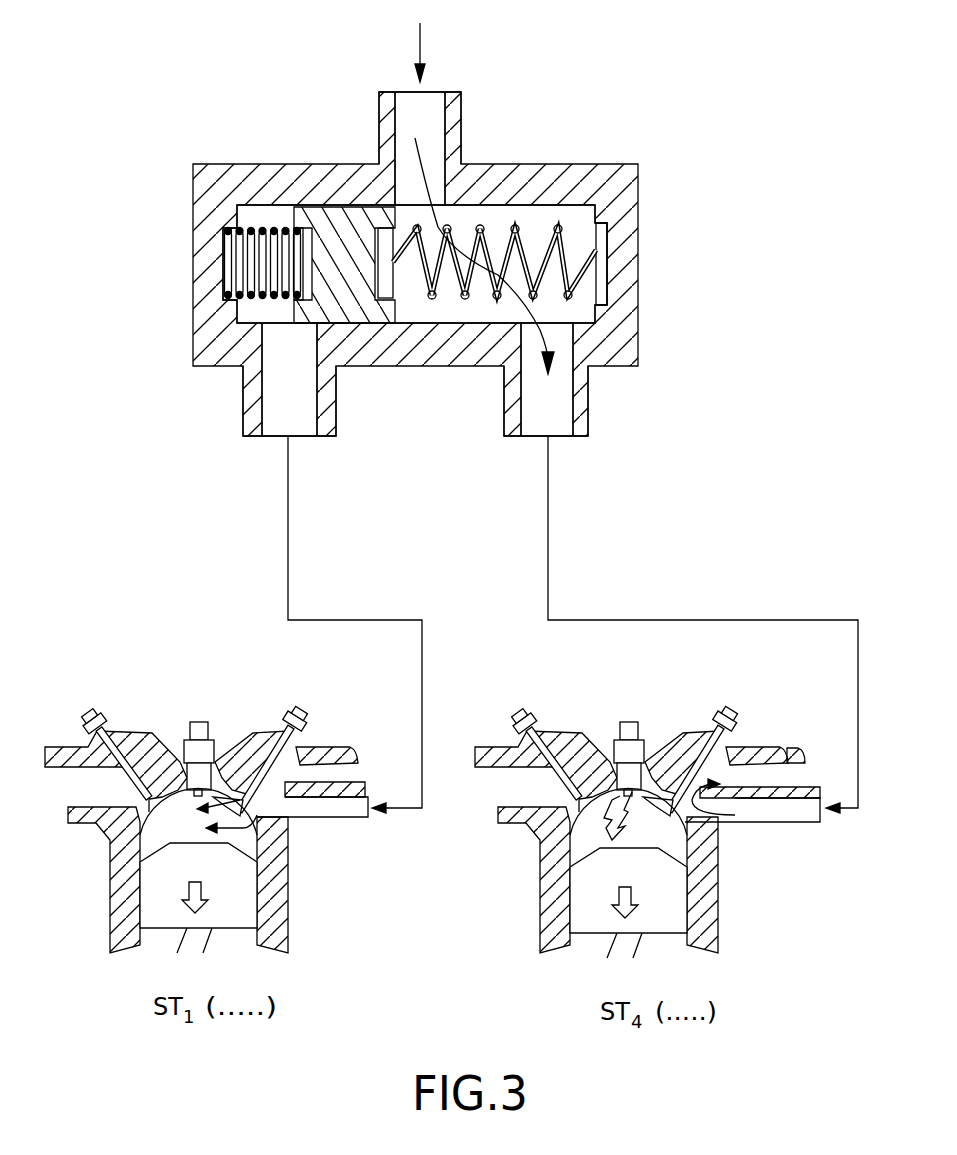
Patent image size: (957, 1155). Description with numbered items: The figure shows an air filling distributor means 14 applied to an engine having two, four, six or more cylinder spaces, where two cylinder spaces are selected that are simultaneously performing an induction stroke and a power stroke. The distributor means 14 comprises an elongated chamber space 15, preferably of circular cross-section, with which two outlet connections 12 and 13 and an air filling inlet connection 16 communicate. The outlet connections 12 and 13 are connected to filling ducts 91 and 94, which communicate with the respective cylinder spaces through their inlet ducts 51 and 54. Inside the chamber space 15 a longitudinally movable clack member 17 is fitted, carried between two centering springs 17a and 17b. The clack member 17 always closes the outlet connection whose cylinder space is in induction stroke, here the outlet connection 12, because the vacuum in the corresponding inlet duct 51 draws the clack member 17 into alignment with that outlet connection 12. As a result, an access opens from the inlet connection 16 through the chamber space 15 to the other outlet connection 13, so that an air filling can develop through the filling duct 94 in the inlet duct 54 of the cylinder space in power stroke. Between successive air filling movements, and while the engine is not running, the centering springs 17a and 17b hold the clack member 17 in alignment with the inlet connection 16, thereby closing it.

The distributor means 14 is at (650, 253).
The air filling inlet connection 16 is at (450, 124).
The chamber space 15 is at (583, 235).
The outlet connection 12 is at (328, 419).
The outlet connection 13 is at (575, 420).
The clack member 17 is at (345, 232).
The centering spring 17a is at (251, 238).
The centering spring 17b is at (486, 272).
The inlet duct 51 is at (352, 774).
The filling duct 91 is at (355, 808).
The inlet duct 54 is at (795, 768).
The filling duct 94 is at (800, 812).